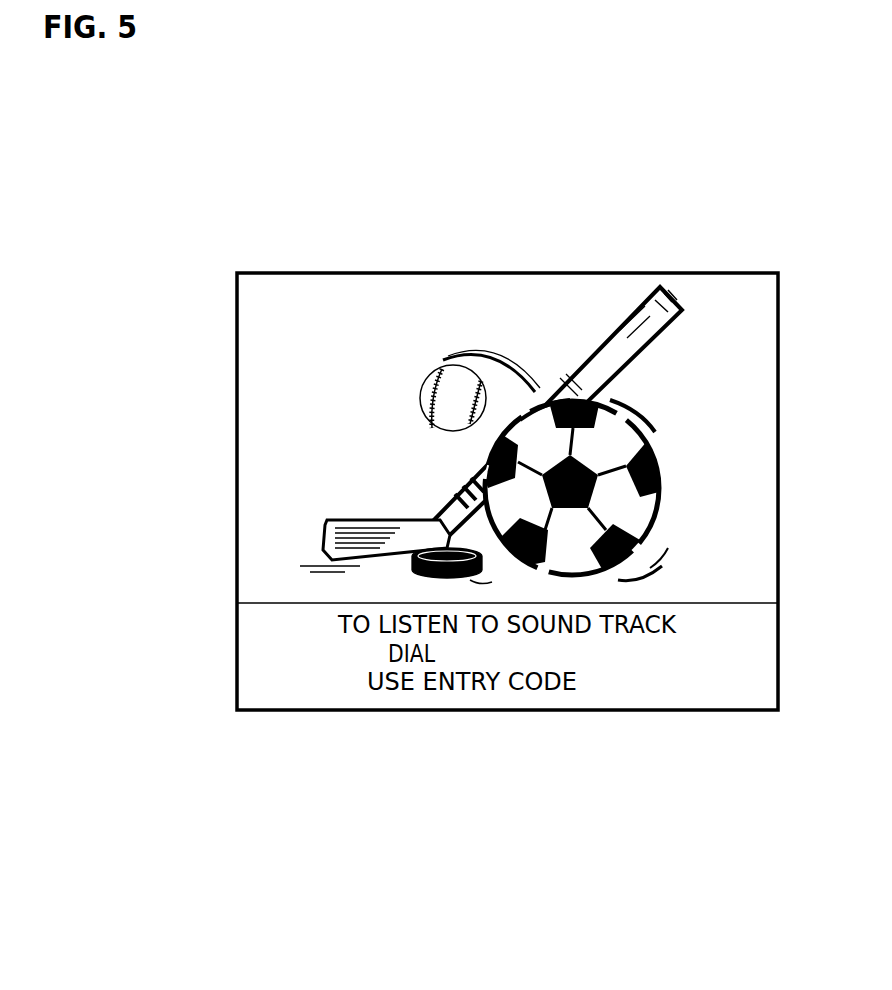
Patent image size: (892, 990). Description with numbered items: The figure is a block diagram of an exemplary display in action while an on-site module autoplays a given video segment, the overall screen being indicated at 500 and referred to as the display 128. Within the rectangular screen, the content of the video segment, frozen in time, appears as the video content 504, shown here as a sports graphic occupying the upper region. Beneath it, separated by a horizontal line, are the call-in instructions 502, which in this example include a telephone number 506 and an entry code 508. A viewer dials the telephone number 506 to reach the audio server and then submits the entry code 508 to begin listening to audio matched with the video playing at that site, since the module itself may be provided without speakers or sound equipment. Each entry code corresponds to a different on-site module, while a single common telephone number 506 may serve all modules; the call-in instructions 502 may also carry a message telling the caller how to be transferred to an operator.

The video display / advertisement screen 500 is at (128, 121).
The player 128 is at (214, 485).
The call-in instructions 502 is at (256, 683).
The video content 504 is at (458, 362).
The telephone number 506 is at (636, 655).
The entry code 508 is at (636, 692).